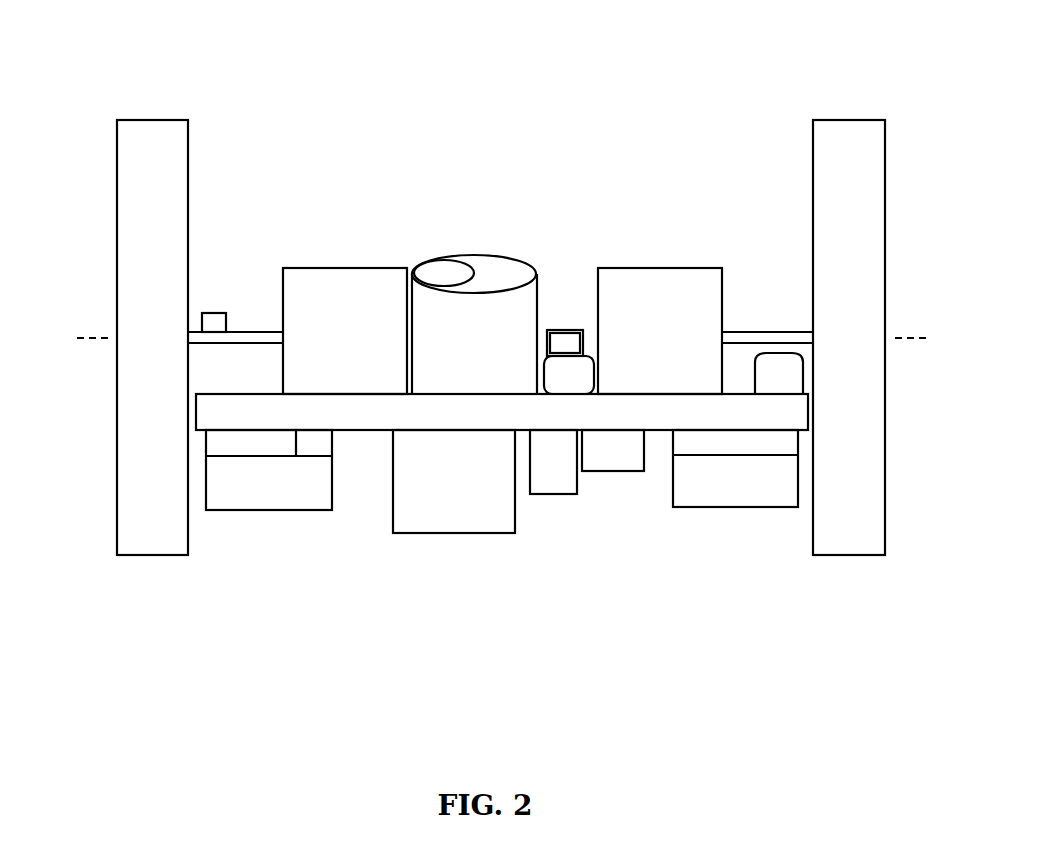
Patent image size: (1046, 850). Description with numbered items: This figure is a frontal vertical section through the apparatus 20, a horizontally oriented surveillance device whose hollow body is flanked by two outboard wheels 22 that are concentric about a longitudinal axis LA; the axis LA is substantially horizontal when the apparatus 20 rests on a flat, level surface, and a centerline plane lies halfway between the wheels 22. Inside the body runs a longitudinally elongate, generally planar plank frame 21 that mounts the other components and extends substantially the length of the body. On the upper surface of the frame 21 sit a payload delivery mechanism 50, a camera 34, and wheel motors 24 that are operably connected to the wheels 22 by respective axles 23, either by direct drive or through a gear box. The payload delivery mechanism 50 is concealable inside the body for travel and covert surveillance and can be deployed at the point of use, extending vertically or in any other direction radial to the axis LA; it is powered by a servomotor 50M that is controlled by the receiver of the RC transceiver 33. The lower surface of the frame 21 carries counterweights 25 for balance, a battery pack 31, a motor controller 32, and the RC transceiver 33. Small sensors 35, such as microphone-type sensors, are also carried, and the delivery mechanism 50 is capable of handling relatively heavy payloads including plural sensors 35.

The apparatus 20 is at (216, 610).
The plank frame 21 is at (367, 410).
The outboard wheels 22 is at (130, 214).
The axles 23 is at (261, 332).
The wheel motors 24 is at (345, 300).
The counterweights 25 is at (256, 495).
The battery pack 31 is at (445, 500).
The motor controller 32 is at (538, 487).
The RC transceiver 33 is at (606, 447).
The camera 34 is at (588, 350).
The sensor 35 is at (216, 320).
The payload delivery mechanism 50 is at (507, 280).
The servomotor 50M is at (547, 330).
The longitudinal axis LA is at (502, 339).